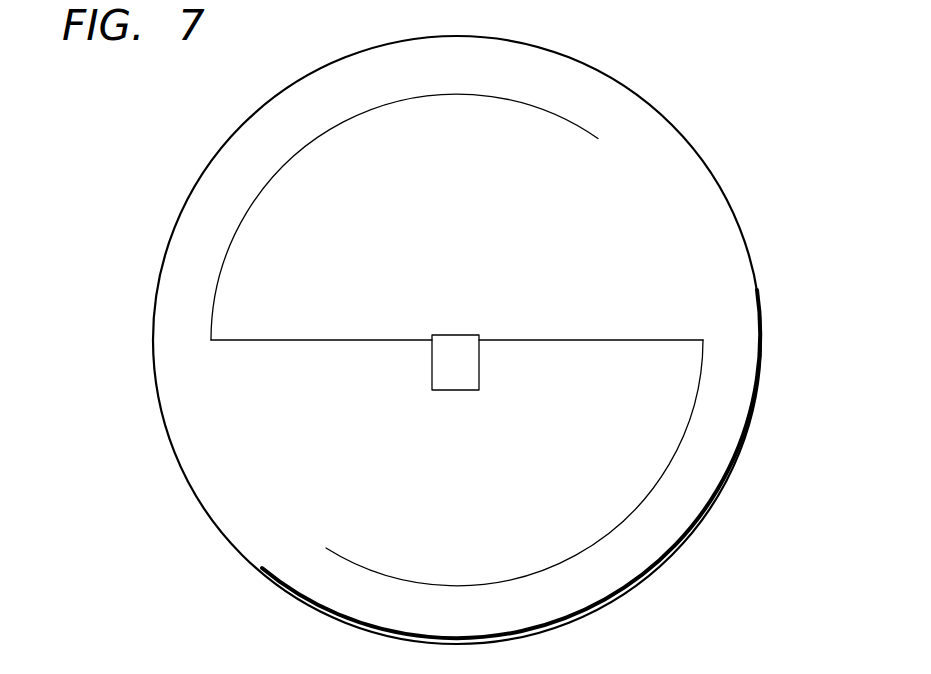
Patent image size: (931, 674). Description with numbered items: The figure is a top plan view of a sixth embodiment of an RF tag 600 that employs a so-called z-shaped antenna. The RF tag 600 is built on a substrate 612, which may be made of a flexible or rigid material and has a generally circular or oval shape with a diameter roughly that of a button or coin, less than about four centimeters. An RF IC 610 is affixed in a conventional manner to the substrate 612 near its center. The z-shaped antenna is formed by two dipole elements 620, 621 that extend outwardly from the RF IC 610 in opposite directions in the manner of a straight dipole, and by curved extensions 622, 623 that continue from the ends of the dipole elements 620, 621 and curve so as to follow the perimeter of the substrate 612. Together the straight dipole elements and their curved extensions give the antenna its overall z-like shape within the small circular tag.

The RF tag 600 is at (198, 133).
The substrate 612 is at (738, 262).
The RF IC 610 is at (458, 390).
The dipole element 620 is at (320, 340).
The dipole element 621 is at (584, 340).
The curved extension 622 is at (278, 170).
The curved extension 623 is at (458, 585).